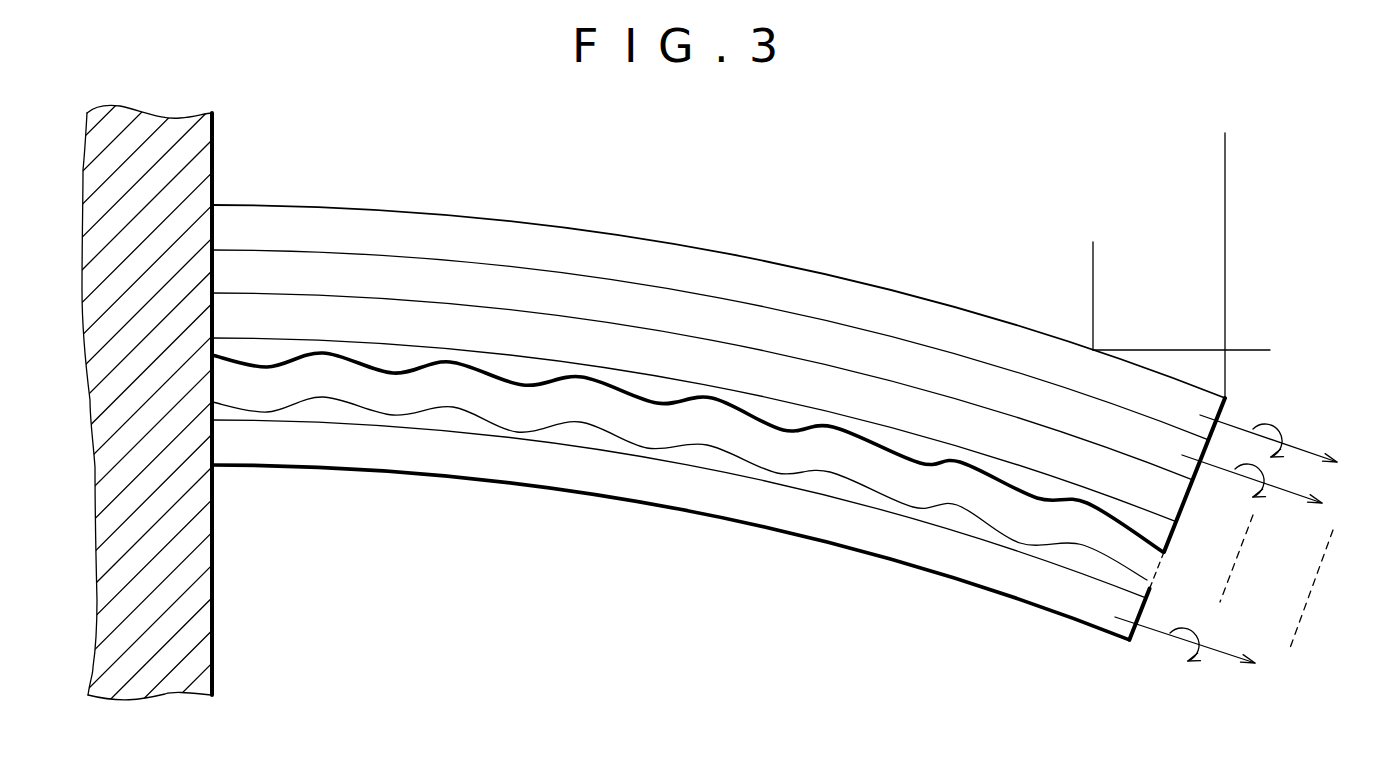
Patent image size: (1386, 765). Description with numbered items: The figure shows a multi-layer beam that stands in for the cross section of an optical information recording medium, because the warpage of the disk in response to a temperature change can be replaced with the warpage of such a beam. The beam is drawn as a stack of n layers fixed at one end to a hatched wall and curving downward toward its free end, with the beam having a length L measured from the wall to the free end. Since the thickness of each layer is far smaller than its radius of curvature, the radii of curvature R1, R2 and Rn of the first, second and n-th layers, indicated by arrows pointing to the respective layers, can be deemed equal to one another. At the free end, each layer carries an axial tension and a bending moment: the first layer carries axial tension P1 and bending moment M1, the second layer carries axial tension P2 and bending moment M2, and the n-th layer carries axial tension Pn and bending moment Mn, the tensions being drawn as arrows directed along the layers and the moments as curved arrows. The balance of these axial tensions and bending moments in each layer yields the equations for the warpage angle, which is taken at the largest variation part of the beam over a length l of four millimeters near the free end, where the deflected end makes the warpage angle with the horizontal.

The length of a beam L is at (212, 150).
The length l is at (1093, 255).
The radius of curvature R1 is at (488, 264).
The radius of curvature R2 is at (563, 316).
The radius of curvature Rn is at (638, 502).
The bending moment M1 is at (1287, 440).
The bending moment M2 is at (1270, 480).
The bending moment Mn is at (1204, 644).
The axial tension P1 is at (1285, 450).
The axial tension P2 is at (1268, 490).
The axial tension Pn is at (1201, 651).